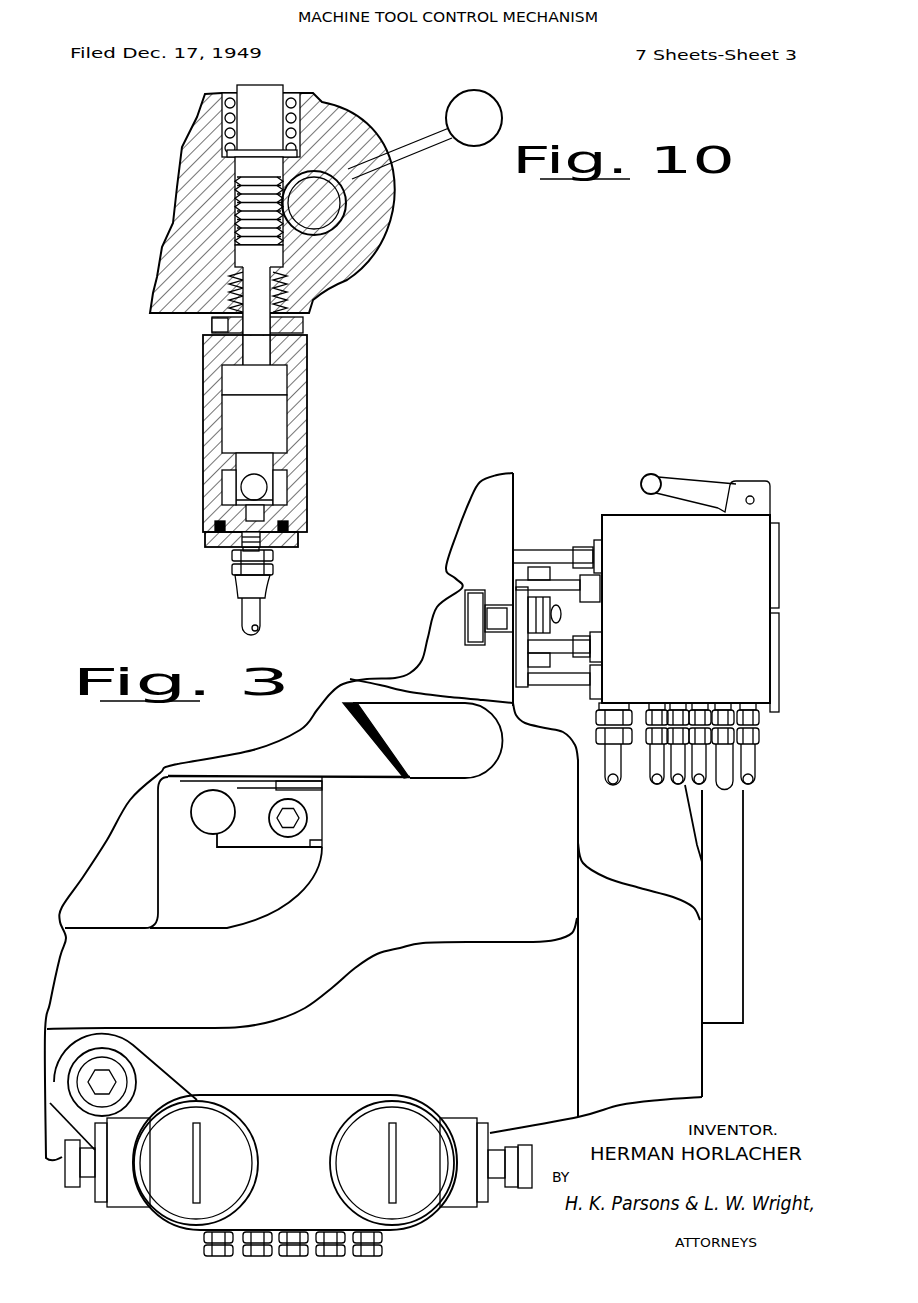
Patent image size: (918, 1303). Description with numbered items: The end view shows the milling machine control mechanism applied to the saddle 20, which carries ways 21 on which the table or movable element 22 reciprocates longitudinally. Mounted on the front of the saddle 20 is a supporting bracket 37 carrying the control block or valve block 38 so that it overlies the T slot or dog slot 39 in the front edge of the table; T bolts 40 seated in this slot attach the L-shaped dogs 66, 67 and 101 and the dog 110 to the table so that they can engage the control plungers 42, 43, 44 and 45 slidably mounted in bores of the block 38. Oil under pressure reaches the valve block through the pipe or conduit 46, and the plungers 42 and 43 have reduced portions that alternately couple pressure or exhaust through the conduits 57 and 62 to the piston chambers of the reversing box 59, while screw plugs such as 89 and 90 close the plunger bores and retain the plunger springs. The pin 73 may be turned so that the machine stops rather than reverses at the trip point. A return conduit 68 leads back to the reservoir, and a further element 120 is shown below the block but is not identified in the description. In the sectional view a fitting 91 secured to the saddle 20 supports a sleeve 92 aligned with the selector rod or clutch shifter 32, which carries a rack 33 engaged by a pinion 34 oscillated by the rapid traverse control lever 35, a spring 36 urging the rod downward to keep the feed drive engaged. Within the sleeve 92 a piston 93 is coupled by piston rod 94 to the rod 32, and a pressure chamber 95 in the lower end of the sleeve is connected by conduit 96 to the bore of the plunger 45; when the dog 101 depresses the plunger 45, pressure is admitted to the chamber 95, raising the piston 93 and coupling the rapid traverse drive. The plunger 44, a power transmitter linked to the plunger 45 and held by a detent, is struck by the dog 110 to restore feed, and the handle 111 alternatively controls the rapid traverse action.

In FIG. 10, the saddle 20 is at (160, 293).
In FIG. 3, the saddle 20 is at (683, 1052).
In FIG. 3, the ways 21 is at (350, 720).
In FIG. 3, the table 22 is at (497, 484).
In FIG. 10, the selector rod 32 is at (250, 135).
In FIG. 10, the rack 33 is at (236, 197).
In FIG. 10, the pinion 34 is at (372, 250).
In FIG. 10, the rapid traverse control lever 35 is at (421, 150).
In FIG. 10, the spring 36 is at (305, 97).
In FIG. 3, the supporting bracket 37 is at (733, 907).
In FIG. 3, the control block 38 is at (630, 505).
In FIG. 3, the dog slot 39 is at (467, 586).
In FIG. 3, the T bolt 40 is at (473, 618).
In FIG. 3, the control plunger 42 is at (590, 636).
In FIG. 3, the control plunger 43 is at (590, 687).
In FIG. 3, the plunger 44 is at (595, 547).
In FIG. 3, the plunger 45 is at (590, 600).
In FIG. 3, the pressure conduit 46 is at (704, 788).
In FIG. 3, the conduit 57 is at (753, 767).
In FIG. 3, the reversing box 59 is at (323, 1103).
In FIG. 3, the conduit 62 is at (678, 788).
In FIG. 3, the L-shaped dog 66 is at (515, 647).
In FIG. 3, the L-shaped dog 67 is at (518, 673).
In FIG. 3, the return conduit 68 is at (657, 788).
In FIG. 3, the pin 73 is at (533, 1157).
In FIG. 3, the screw plug 89 is at (417, 1203).
In FIG. 3, the screw plug 90 is at (173, 1207).
In FIG. 10, the fitting 91 is at (308, 327).
In FIG. 10, the sleeve 92 is at (297, 419).
In FIG. 10, the piston 93 is at (250, 421).
In FIG. 10, the piston rod 94 is at (250, 372).
In FIG. 10, the pressure chamber 95 is at (222, 498).
In FIG. 10, the conduit 96 is at (254, 616).
In FIG. 3, the conduit 96 is at (746, 787).
In FIG. 3, the L-shaped dog 101 is at (530, 583).
In FIG. 3, the dog 110 is at (553, 550).
In FIG. 3, the handle 111 is at (683, 476).
In FIG. 3, the pipe fitting 120 is at (621, 797).